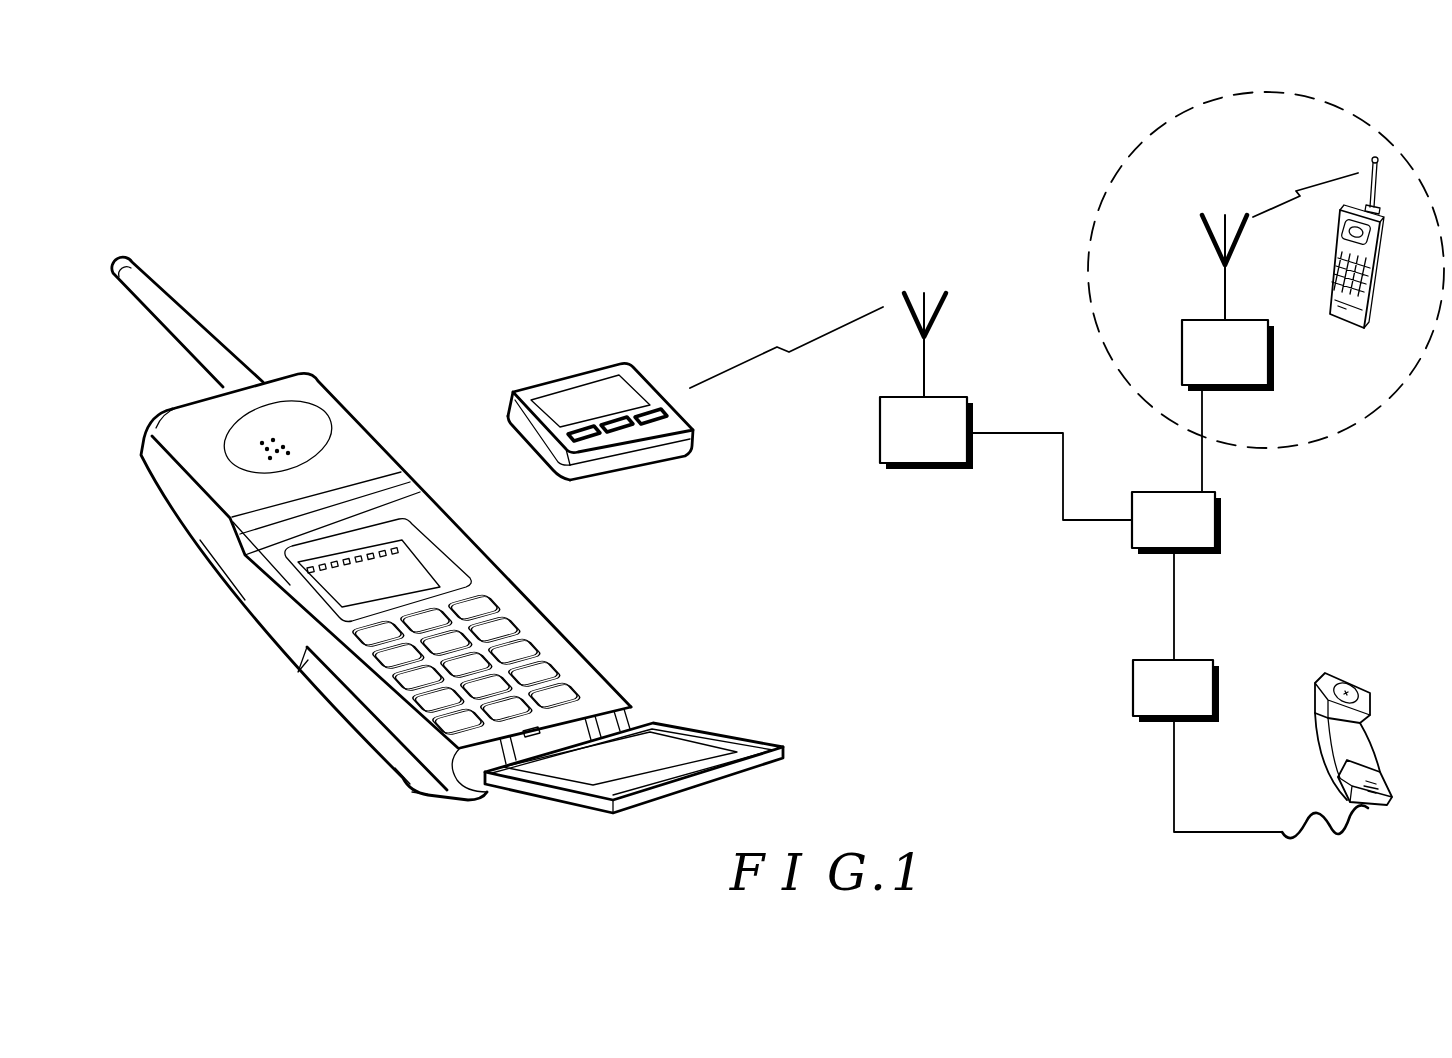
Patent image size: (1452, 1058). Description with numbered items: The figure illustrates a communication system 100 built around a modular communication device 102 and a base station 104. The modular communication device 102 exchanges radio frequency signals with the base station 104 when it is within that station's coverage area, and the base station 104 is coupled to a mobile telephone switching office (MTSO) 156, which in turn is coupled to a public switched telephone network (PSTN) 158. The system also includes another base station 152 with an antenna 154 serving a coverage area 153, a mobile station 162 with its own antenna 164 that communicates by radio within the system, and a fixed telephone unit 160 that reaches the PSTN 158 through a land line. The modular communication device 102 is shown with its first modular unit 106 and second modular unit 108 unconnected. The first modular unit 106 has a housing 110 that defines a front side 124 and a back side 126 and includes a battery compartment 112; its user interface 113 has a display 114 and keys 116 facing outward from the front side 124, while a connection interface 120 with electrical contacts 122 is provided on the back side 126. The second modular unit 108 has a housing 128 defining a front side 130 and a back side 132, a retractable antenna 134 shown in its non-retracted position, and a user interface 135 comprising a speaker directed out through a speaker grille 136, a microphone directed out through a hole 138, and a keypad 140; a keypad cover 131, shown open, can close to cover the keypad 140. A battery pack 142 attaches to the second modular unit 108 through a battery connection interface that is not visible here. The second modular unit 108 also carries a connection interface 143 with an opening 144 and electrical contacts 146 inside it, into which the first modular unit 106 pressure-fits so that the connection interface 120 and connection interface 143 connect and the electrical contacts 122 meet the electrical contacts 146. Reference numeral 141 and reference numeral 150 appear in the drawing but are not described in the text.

The communication system 100 is at (879, 612).
The modular communication device 102 is at (353, 258).
The base station 104 is at (898, 398).
The first modular unit 106 is at (563, 378).
The second modular unit 108 is at (354, 400).
The housing 110 is at (531, 392).
The battery compartment 112 is at (689, 432).
The user interface 113 is at (620, 345).
The display 114 is at (583, 395).
The keys 116 is at (618, 403).
The connection interface 120 is at (505, 441).
The electrical contacts 122 is at (520, 455).
The front side 124 is at (589, 447).
The back side 126 is at (545, 478).
The housing 128 is at (206, 408).
The front side 130 is at (318, 622).
The keypad cover 131 is at (762, 772).
The back side 132 is at (241, 620).
The retractable antenna 134 is at (158, 284).
The user interface 135 is at (560, 583).
The speaker grille 136 is at (280, 420).
The hole 138 is at (533, 738).
The keypad 140 is at (524, 646).
The housing side region 141 is at (310, 588).
The battery pack 142 is at (322, 685).
The connection interface 143 is at (302, 532).
The opening 144 is at (428, 577).
The electrical contacts 146 is at (367, 542).
The first base station antenna 150 is at (925, 362).
The base station 152 is at (1250, 393).
The coverage area 153 is at (1187, 113).
The antenna 154 is at (1224, 298).
The mobile telephone switching office (MTSO) 156 is at (1226, 521).
The public switched telephone network (PSTN) 158 is at (1204, 660).
The fixed telephone unit 160 is at (1355, 679).
The mobile station 162 is at (1348, 270).
The antenna 164 is at (1368, 163).